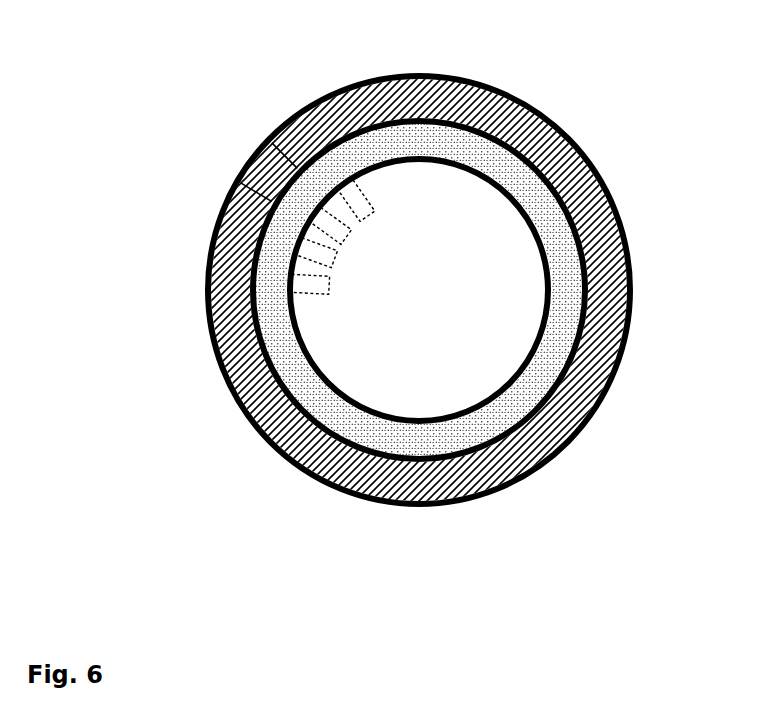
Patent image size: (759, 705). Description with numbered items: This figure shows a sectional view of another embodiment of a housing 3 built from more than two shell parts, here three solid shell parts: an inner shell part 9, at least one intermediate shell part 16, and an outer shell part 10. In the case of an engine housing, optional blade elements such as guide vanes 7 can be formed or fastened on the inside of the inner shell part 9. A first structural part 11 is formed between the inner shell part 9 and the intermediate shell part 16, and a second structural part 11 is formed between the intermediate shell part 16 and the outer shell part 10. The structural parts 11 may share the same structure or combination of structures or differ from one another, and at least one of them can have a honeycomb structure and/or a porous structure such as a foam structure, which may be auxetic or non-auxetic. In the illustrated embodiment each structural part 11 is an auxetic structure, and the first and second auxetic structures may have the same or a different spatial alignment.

The housing 3 is at (445, 254).
The guide vanes 7 is at (402, 290).
The inner shell part 9 is at (388, 410).
The outer shell part 10 is at (294, 113).
The structural part 11 is at (567, 233).
The intermediate shell part 16 is at (270, 147).